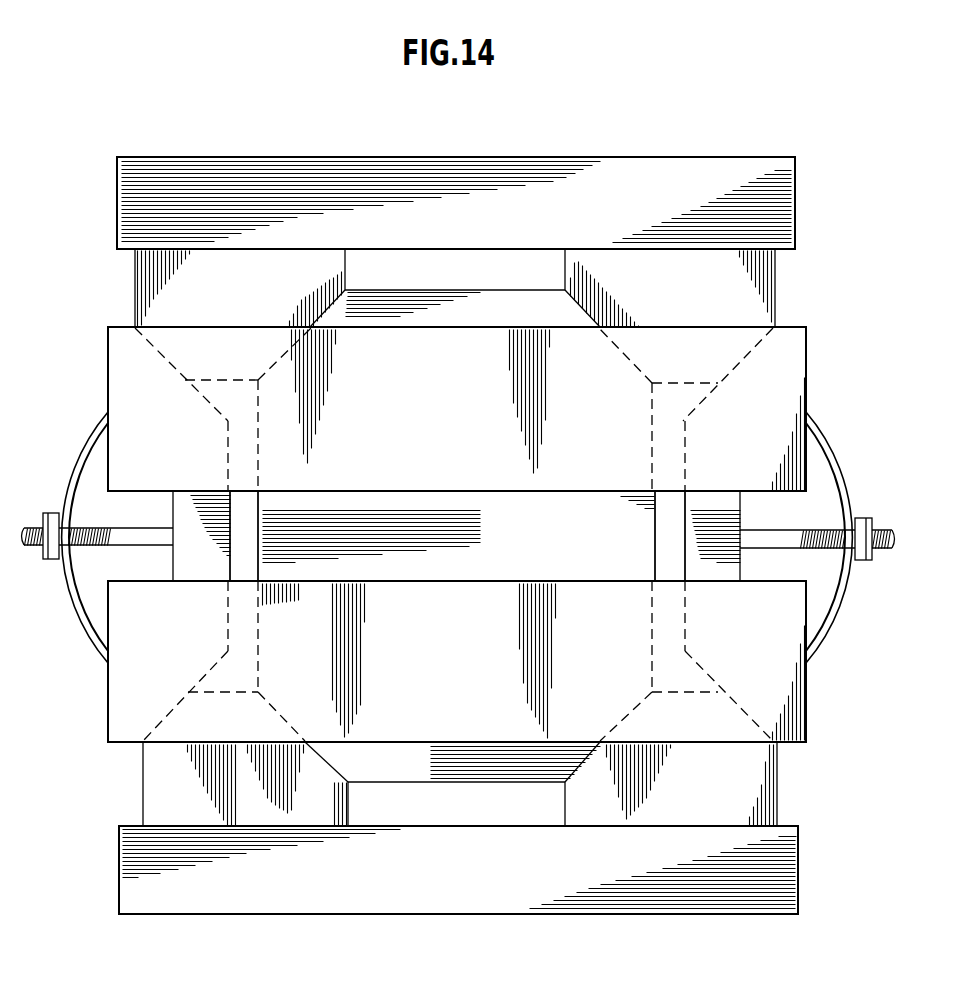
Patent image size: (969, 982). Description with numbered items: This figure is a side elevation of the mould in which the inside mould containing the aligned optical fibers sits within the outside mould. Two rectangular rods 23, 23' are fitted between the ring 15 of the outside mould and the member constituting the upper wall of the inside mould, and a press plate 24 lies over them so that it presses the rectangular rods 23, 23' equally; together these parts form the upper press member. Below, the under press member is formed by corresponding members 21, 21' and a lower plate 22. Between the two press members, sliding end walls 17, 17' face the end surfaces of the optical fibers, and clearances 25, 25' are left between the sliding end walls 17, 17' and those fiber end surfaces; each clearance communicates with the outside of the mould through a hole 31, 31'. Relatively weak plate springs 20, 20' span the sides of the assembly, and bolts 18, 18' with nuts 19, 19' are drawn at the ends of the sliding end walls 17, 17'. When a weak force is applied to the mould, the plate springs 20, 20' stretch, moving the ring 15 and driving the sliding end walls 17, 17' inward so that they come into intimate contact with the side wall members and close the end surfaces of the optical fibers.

The ring 15 is at (806, 366).
The sliding end wall 17 is at (755, 536).
The sliding end wall 17' is at (167, 536).
The bolt 18 is at (817, 524).
The bolt 18' is at (98, 523).
The nut 19 is at (871, 520).
The nut 19' is at (41, 520).
The plate spring 20 is at (836, 537).
The plate spring 20' is at (79, 537).
The under press member element 21 is at (792, 784).
The under press member element 21' is at (162, 784).
The under press plate 22 is at (308, 906).
The rectangular rod 23 is at (792, 288).
The rectangular rod 23' is at (130, 288).
The press plate 24 is at (617, 157).
The clearance 25 is at (685, 534).
The clearance 25' is at (223, 534).
The hole 31 is at (700, 556).
The hole 31' is at (221, 555).